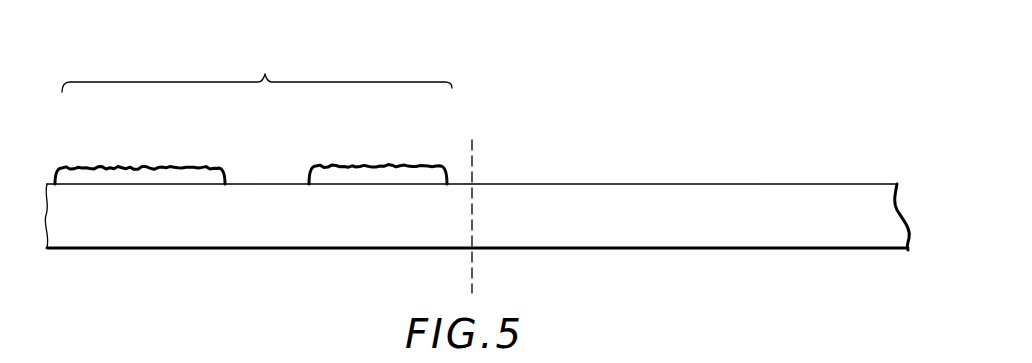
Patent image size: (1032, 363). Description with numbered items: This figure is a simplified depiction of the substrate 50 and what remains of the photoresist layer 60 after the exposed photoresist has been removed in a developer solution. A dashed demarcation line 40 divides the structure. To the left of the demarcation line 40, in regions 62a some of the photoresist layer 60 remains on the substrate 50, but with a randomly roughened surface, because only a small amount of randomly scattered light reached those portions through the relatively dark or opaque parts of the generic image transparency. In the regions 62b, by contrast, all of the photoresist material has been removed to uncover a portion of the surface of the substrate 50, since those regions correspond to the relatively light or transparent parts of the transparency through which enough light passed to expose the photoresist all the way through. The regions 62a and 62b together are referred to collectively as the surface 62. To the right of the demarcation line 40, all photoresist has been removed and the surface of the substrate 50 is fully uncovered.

The demarcation line 40 is at (473, 156).
The substrate 50 is at (837, 198).
The photoresist layer 60 is at (72, 176).
The surface 62 is at (252, 113).
The regions of remaining photoresist 62a is at (242, 149).
The regions of removed photoresist 62b is at (267, 184).